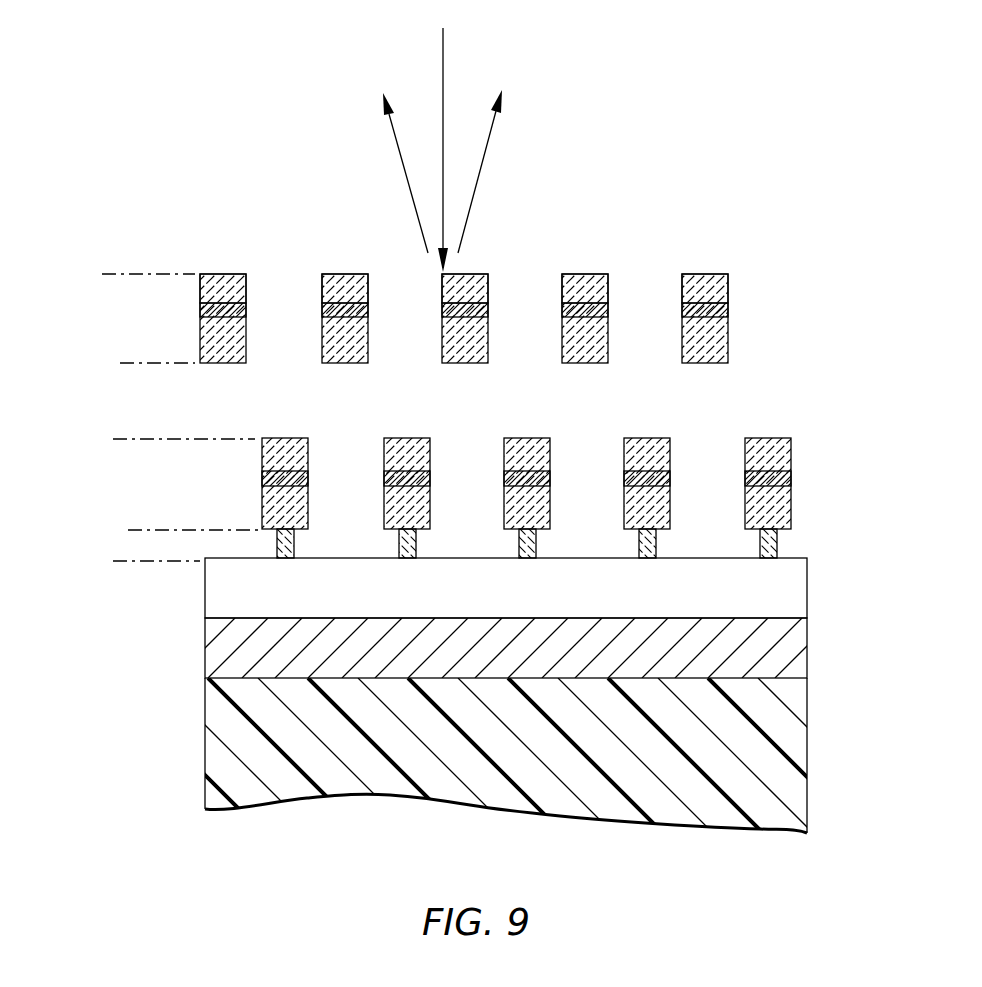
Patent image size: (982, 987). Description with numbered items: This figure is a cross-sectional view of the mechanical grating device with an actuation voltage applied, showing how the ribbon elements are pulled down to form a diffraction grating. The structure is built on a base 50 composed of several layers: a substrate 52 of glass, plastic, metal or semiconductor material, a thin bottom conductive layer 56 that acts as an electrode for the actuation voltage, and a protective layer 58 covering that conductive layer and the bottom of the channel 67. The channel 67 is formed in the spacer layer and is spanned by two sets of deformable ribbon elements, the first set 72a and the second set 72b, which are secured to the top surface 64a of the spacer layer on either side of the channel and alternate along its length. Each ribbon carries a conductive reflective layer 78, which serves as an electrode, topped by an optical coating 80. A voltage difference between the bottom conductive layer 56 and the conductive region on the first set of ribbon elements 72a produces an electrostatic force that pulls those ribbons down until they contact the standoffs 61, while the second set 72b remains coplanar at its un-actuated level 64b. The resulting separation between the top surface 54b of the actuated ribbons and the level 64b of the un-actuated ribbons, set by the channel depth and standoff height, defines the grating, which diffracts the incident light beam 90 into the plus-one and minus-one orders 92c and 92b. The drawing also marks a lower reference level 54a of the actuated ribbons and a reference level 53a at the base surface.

The incident light beam 90 is at (440, 44).
The +1 order diffracted beam 92c is at (398, 163).
The −1 order diffracted beam 92b is at (488, 152).
The optical coating 80 is at (217, 277).
The reflective layer 78 is at (200, 309).
The second set of deformable ribbon elements 72b is at (722, 330).
The first set of deformable ribbon elements 72a is at (668, 500).
The channel 67 is at (630, 403).
The top surface of un-actuated ribbon elements 64b is at (138, 272).
The top surface of spacer layer 64a is at (130, 362).
The top surface of actuated ribbon elements 54b is at (125, 440).
The lower reference plane of lower row 54a is at (135, 530).
The substrate surface plane 53a is at (125, 562).
The standoffs 61 is at (660, 542).
The protective layer 58 is at (795, 588).
The bottom conductive layer 56 is at (795, 645).
The substrate 52 is at (795, 730).
The base 50 is at (168, 738).